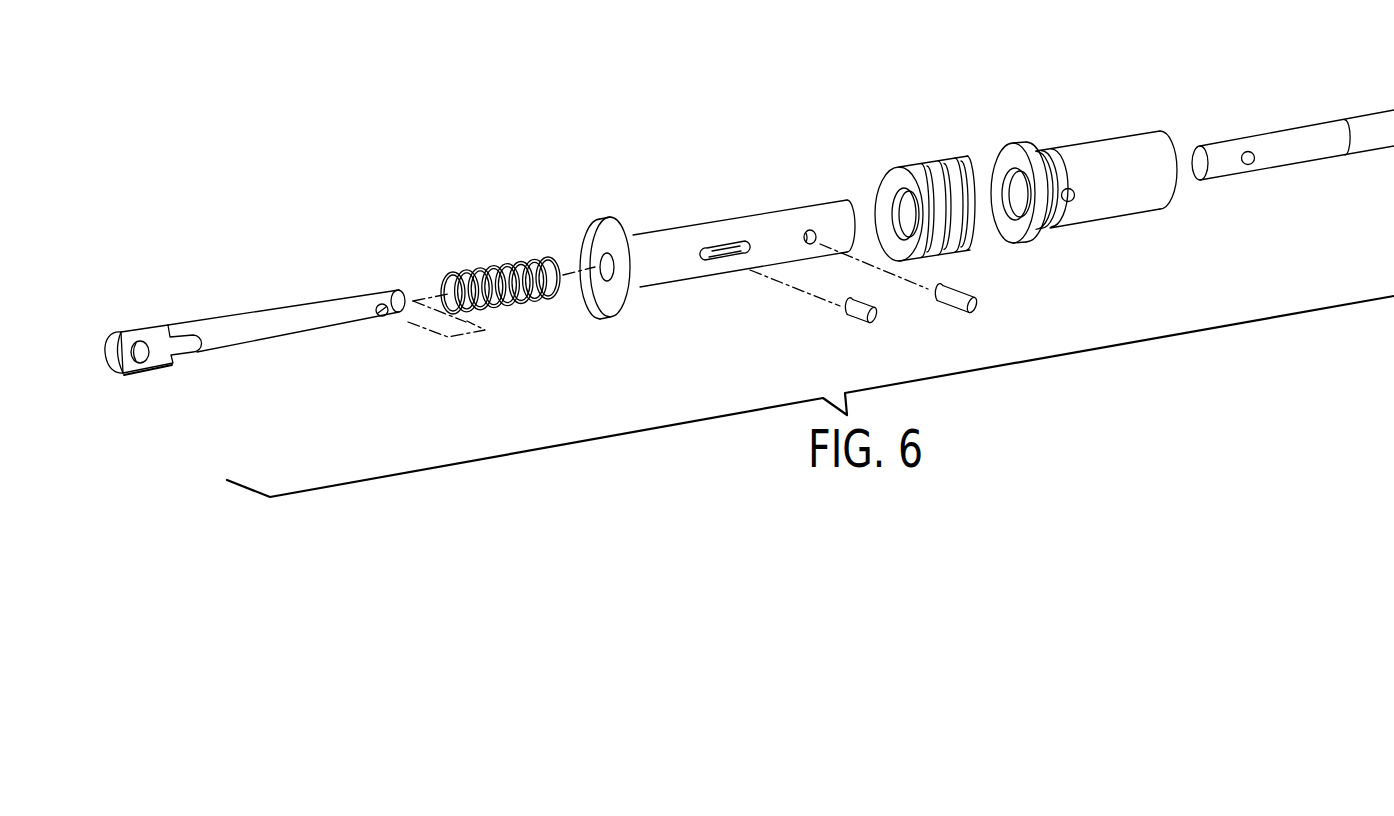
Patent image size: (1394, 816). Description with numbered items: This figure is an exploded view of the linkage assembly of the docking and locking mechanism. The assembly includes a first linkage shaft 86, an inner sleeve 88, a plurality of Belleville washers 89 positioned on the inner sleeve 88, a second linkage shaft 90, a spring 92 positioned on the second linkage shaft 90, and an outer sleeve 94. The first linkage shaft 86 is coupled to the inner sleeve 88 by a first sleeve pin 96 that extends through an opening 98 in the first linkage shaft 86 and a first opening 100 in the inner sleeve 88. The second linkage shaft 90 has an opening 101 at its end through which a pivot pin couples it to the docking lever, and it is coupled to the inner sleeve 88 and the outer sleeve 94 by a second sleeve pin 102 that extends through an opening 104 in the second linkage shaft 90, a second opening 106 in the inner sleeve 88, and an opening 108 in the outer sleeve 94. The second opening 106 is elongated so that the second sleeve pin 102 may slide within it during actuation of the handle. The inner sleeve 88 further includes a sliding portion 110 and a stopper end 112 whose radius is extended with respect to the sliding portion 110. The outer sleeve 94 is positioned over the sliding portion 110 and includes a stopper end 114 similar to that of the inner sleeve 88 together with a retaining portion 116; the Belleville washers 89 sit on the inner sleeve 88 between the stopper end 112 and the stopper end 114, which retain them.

The first linkage shaft 86 is at (1293, 142).
The inner sleeve 88 is at (744, 219).
The Belleville washers 89 is at (910, 157).
The second linkage shaft 90 is at (254, 296).
The spring 92 is at (460, 279).
The outer sleeve 94 is at (1076, 164).
The first sleeve pin 96 is at (948, 300).
The opening 98 is at (1257, 152).
The first opening 100 is at (800, 228).
The opening 101 is at (139, 342).
The second sleeve pin 102 is at (853, 313).
The opening 104 is at (374, 300).
The second opening 106 is at (720, 242).
The opening 108 is at (1080, 197).
The sliding portion 110 is at (665, 263).
The stopper end 112 is at (592, 237).
The stopper end 114 is at (1007, 160).
The retaining portion 116 is at (1150, 153).